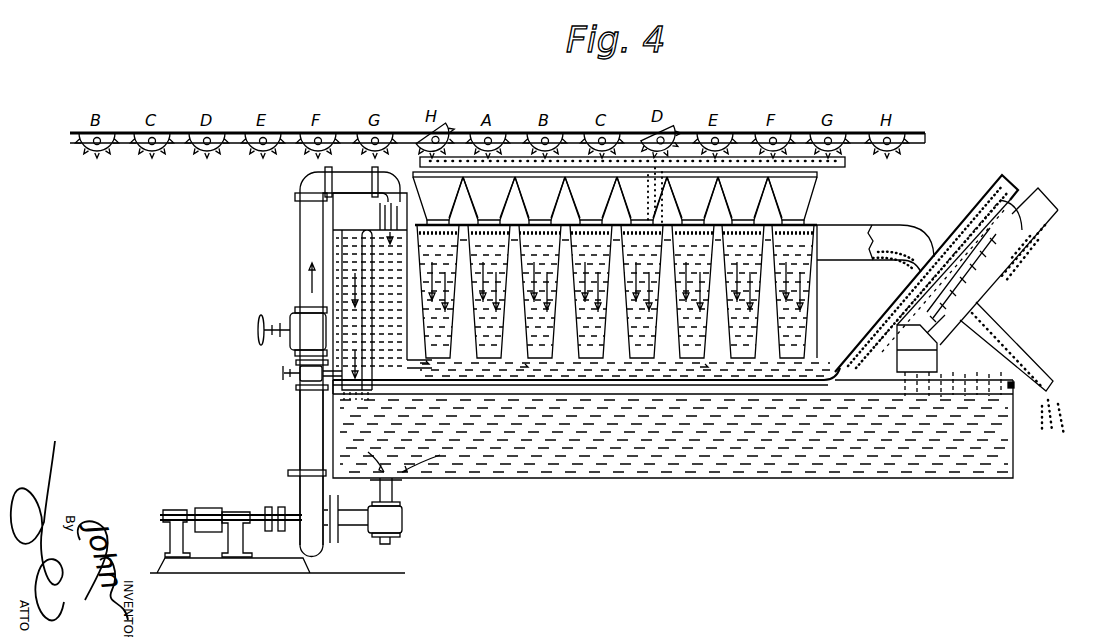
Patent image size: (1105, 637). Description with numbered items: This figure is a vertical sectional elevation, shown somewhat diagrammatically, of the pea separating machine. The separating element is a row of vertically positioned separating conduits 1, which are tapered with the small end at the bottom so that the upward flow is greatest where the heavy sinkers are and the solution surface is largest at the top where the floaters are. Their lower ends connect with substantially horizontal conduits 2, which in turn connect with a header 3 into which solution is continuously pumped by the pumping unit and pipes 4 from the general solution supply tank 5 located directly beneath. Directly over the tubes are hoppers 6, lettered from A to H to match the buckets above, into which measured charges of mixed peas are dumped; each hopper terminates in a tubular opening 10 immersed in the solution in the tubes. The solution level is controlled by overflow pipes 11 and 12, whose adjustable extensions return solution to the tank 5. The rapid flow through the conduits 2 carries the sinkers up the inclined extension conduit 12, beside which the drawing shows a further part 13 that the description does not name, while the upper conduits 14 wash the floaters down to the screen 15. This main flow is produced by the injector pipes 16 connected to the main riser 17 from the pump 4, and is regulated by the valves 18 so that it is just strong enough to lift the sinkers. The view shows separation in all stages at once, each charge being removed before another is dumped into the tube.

The separating conduits 1 is at (822, 325).
The horizontally positioned conduits 2 is at (834, 356).
The header 3 is at (408, 333).
The pumping unit and pipes 4 is at (306, 490).
The solution supply tank 5 is at (555, 462).
The hoppers 6 is at (615, 196).
The tubular opening 10 is at (632, 228).
The overflow pipe 11 is at (342, 277).
The overflow pipe 12 is at (888, 298).
The feed pipe 13 is at (1036, 206).
The upper conduits 14 is at (833, 236).
The screen 15 is at (1012, 345).
The injector pipes 16 is at (388, 378).
The main riser 17 is at (306, 398).
The valves 18 is at (292, 372).